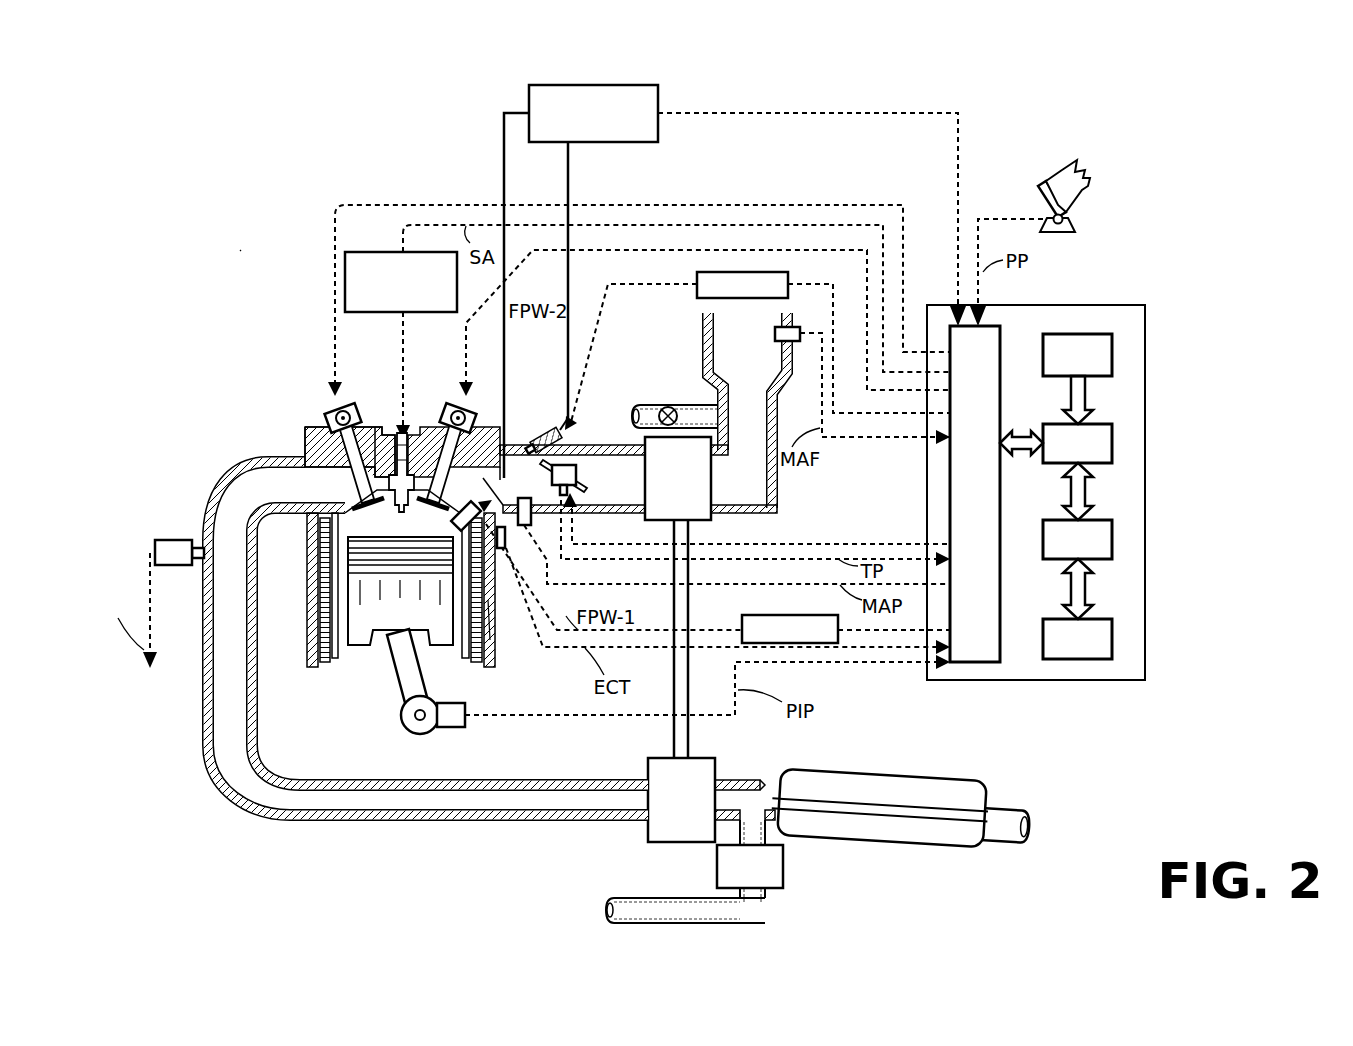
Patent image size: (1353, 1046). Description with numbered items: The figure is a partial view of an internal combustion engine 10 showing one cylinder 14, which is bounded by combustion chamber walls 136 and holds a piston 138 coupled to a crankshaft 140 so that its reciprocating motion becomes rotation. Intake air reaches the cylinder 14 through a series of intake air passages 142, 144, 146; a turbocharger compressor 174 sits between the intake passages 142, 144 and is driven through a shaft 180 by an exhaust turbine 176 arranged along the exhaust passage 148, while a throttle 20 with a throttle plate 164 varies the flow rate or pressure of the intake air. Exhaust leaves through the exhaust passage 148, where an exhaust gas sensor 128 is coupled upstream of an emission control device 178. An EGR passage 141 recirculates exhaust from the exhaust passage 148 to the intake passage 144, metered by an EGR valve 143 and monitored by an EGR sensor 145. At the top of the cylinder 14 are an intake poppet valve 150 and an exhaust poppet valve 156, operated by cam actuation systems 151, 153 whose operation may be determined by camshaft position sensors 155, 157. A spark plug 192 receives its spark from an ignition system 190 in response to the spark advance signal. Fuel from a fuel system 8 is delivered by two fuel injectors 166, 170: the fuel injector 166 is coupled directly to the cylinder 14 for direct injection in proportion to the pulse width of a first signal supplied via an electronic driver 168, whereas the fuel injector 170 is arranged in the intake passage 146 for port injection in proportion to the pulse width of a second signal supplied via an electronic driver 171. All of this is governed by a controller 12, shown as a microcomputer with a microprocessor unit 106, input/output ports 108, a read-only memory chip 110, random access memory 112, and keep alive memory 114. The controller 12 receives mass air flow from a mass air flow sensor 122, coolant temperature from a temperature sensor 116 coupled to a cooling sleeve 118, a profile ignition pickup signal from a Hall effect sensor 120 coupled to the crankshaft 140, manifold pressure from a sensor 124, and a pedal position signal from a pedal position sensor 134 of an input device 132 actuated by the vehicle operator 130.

The fuel system 8 is at (593, 113).
The internal combustion engine 10 is at (258, 292).
The controller 12 is at (1140, 305).
The cylinder 14 is at (400, 521).
The throttle 20 is at (570, 462).
The microprocessor unit 106 is at (1112, 438).
The input/output ports 108 is at (1000, 333).
The read-only memory chip 110 is at (1112, 350).
The random access memory 112 is at (1112, 538).
The keep alive memory 114 is at (1112, 636).
The temperature sensor 116 is at (500, 550).
The cooling sleeve 118 is at (488, 620).
The Hall effect sensor 120 is at (452, 727).
The mass air flow sensor 122 is at (792, 327).
The manifold pressure sensor 124 is at (530, 528).
The exhaust gas sensor 128 is at (155, 548).
The vehicle operator 130 is at (1090, 182).
The input device 132 is at (1038, 190).
The pedal position sensor 134 is at (1075, 220).
The combustion chamber walls 136 is at (340, 660).
The piston 138 is at (385, 620).
The crankshaft 140 is at (410, 732).
The EGR passage 141 is at (660, 405).
The intake air passage 142 is at (747, 410).
The EGR valve 143 is at (674, 408).
The intake air passage 144 is at (630, 479).
The EGR sensor 145 is at (783, 870).
The intake air passage 146 is at (519, 478).
The exhaust passage 148 is at (428, 638).
The intake poppet valve 150 is at (440, 498).
The cam actuation system 151 is at (452, 398).
The cam actuation system 153 is at (350, 397).
The camshaft position sensor 155 is at (478, 408).
The exhaust poppet valve 156 is at (358, 496).
The camshaft position sensor 157 is at (330, 412).
The throttle plate 164 is at (537, 440).
The fuel injector 166 is at (471, 505).
The electronic driver 168 is at (750, 615).
The fuel injector 170 is at (562, 430).
The electronic driver 171 is at (697, 276).
The compressor 174 is at (706, 520).
The exhaust turbine 176 is at (648, 832).
The emission control device 178 is at (878, 770).
The shaft 180 is at (690, 722).
The ignition system 190 is at (363, 252).
The spark plug 192 is at (393, 460).